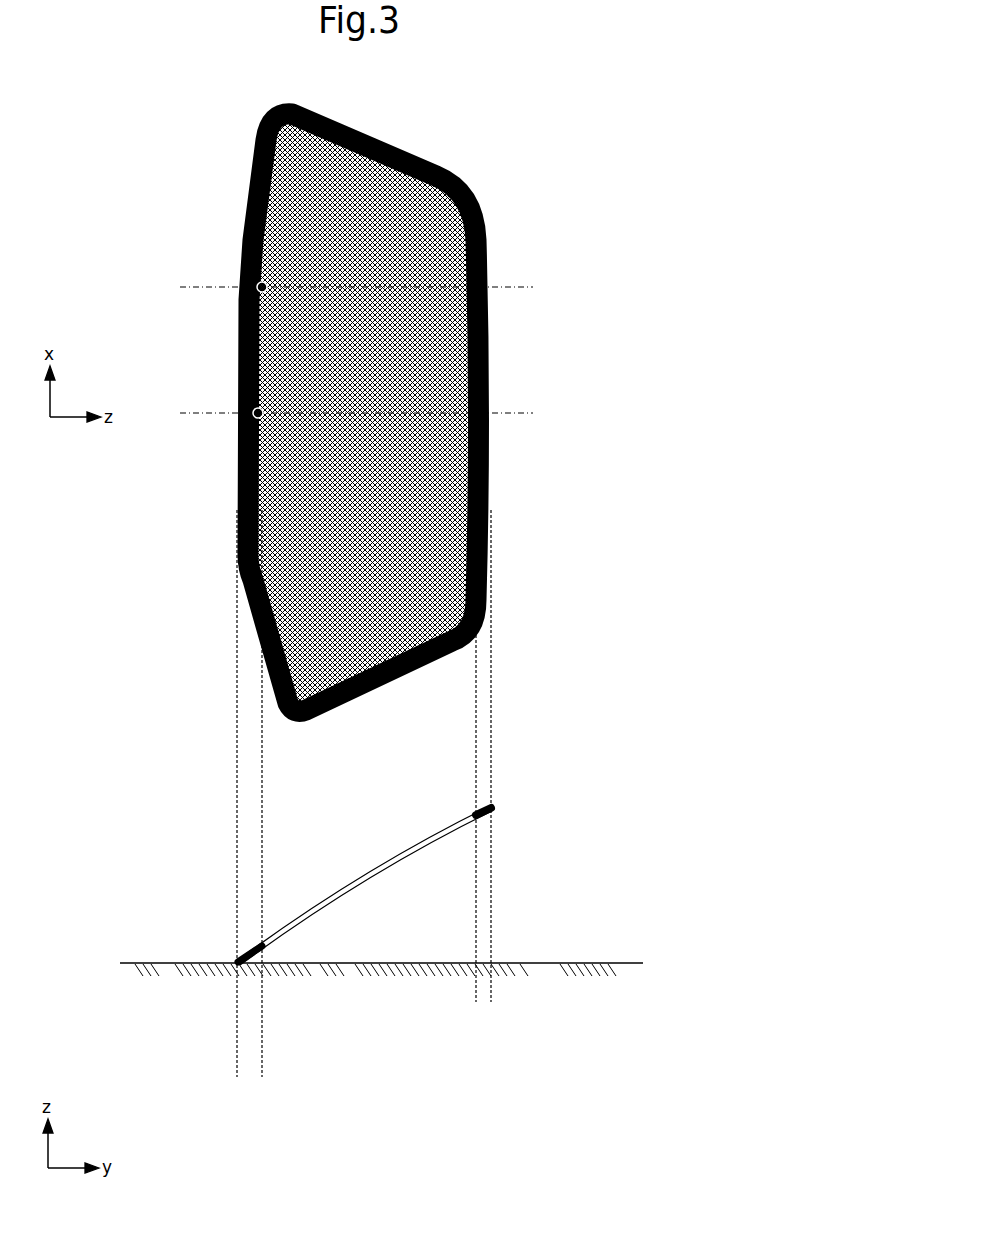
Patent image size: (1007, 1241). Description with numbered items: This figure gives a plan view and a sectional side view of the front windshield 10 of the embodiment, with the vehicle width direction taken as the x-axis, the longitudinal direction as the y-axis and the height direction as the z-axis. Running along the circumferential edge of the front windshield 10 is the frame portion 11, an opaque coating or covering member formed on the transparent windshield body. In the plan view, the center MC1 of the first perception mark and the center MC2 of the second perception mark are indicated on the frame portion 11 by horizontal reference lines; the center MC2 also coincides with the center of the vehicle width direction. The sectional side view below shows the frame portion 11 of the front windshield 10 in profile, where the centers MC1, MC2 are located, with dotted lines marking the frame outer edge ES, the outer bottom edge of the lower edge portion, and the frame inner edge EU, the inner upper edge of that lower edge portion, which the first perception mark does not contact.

The front windshield 10 is at (418, 135).
The frame portion 11 is at (480, 238).
The center of first perception mark MC1 is at (482, 284).
The center of second perception mark MC2 is at (265, 953).
The frame outer edge ES is at (147, 793).
The frame inner edge EU is at (349, 793).